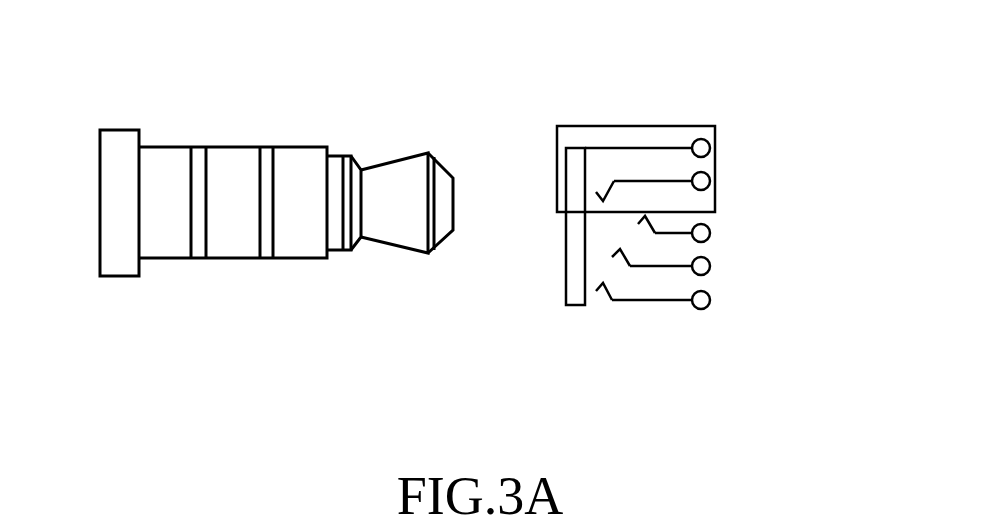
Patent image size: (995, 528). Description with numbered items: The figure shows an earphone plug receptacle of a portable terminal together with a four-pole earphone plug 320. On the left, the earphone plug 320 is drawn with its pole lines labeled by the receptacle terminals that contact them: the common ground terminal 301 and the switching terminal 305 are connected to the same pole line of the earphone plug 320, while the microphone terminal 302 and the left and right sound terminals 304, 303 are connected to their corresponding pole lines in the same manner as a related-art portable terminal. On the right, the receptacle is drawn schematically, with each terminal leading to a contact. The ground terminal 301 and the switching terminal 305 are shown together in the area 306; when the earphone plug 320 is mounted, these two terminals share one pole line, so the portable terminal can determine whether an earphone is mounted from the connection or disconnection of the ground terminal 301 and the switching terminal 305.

The second terminal 301 is at (165, 258).
The microphone terminal 302 is at (233, 258).
The right sound terminal 303 is at (301, 258).
The left sound terminal 304 is at (395, 246).
The sixth terminal 305 is at (172, 51).
The area 306 is at (689, 124).
The 4-pole earphone plug 320 is at (100, 203).